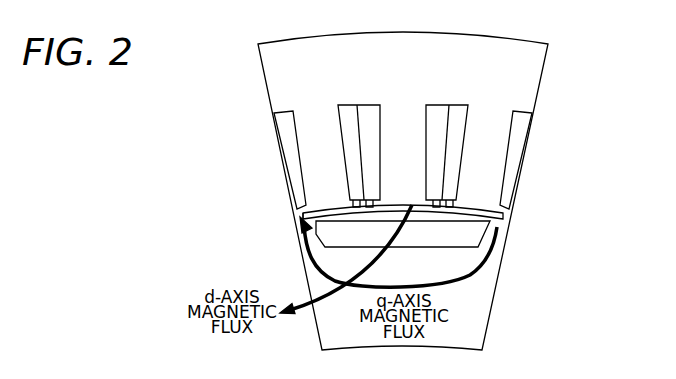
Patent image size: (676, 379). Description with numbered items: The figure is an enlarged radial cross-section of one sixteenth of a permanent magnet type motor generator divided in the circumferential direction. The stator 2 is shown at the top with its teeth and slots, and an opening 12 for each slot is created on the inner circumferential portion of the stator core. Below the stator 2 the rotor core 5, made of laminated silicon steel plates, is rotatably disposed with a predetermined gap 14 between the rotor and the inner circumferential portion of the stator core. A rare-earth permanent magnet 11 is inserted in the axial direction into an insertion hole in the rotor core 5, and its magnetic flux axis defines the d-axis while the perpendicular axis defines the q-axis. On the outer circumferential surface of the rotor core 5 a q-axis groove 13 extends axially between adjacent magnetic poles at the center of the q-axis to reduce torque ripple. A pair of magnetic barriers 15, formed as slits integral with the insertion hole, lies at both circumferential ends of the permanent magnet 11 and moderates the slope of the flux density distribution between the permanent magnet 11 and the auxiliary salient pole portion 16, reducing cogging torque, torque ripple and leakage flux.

The stator 2 is at (302, 86).
The rotor core 5 is at (347, 327).
The permanent magnet 11 is at (422, 234).
The opening 12 is at (296, 213).
The q-axis groove 13 is at (300, 219).
The gap 14 is at (412, 205).
The magnetic barrier 15 is at (300, 238).
The auxiliary salient pole portion 16 is at (497, 228).